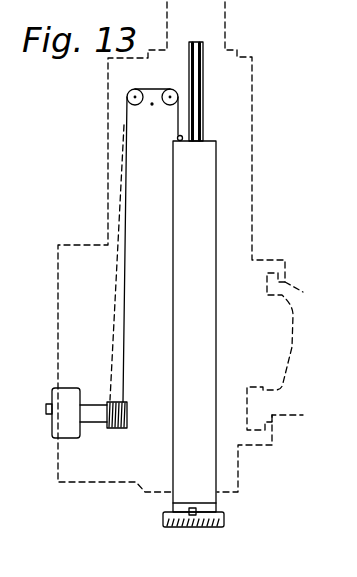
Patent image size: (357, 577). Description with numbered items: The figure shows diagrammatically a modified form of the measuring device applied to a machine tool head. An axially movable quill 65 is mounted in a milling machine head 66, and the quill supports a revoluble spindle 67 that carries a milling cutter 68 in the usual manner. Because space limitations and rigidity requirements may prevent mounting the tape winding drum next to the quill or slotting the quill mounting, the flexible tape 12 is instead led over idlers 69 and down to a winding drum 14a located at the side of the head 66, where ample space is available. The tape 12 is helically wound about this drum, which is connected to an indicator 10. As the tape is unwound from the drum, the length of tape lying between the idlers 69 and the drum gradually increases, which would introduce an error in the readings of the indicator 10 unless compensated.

The indicator 10 is at (71, 388).
The tape 12 is at (178, 120).
The drum 14a is at (116, 430).
The quill 65 is at (207, 155).
The milling machine head 66 is at (260, 179).
The spindle 67 is at (201, 112).
The milling cutter 68 is at (226, 518).
The idlers 69 is at (136, 89).